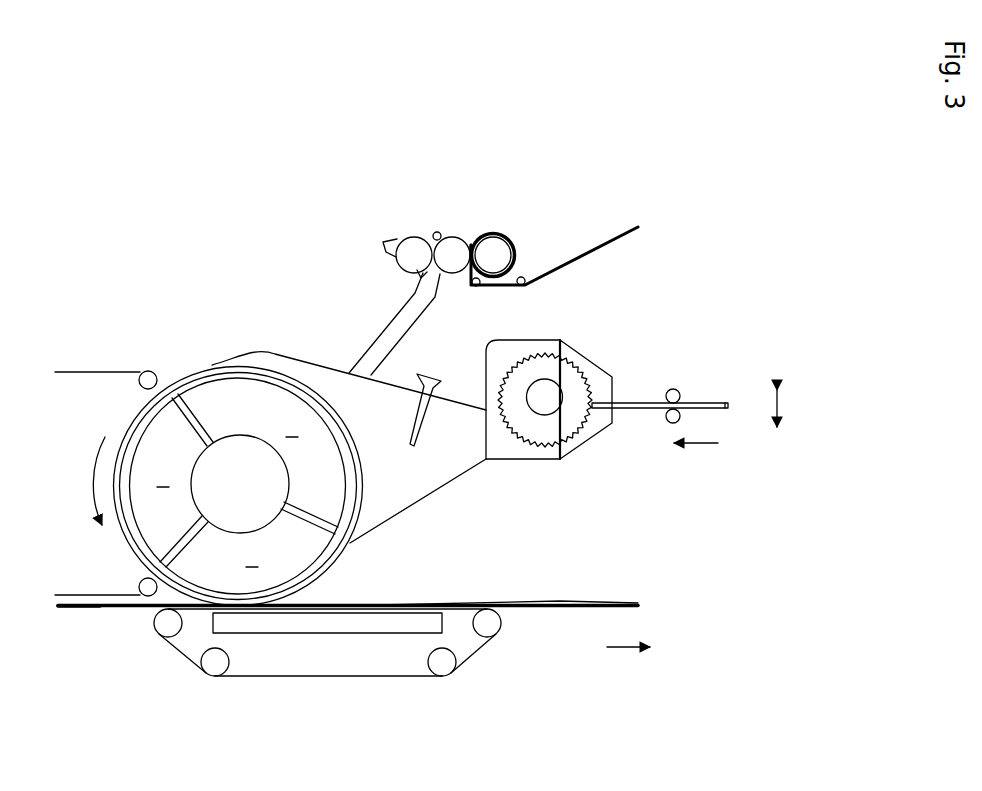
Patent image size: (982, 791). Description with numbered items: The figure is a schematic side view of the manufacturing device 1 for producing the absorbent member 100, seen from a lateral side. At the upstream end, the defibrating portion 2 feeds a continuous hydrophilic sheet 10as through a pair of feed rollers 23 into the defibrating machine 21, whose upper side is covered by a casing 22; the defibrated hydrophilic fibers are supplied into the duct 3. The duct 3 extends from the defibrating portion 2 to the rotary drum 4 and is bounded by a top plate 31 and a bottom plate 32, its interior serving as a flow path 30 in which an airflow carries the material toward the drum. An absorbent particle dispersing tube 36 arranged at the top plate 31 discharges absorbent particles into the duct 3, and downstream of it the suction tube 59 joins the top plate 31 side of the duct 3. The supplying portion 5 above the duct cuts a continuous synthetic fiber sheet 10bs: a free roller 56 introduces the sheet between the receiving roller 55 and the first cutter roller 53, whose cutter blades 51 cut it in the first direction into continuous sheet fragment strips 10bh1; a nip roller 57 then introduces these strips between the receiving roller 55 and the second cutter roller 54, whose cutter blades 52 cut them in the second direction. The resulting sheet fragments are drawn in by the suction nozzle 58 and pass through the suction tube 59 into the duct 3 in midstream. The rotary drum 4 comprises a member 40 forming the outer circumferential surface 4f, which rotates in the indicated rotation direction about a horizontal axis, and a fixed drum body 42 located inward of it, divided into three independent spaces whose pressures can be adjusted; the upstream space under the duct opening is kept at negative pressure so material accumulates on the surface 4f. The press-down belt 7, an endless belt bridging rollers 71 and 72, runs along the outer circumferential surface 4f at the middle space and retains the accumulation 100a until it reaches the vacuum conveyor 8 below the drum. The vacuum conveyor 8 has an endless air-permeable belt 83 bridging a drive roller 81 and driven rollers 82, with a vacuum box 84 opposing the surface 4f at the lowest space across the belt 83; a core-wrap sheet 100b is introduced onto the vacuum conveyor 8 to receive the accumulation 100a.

The manufacturing device 1 is at (686, 112).
The defibrating portion 2 is at (578, 312).
The duct 3 is at (295, 322).
The rotary drum 4 is at (193, 338).
The outer circumferential surface 4f is at (208, 355).
The supplying portion 5 is at (450, 218).
The press-down belt 7 is at (65, 368).
The vacuum conveyor 8 is at (340, 690).
The hydrophilic sheet 10as is at (715, 402).
The synthetic fiber sheet 10bs is at (632, 226).
The continuous sheet fragment strips 10bh1 is at (472, 243).
The defibrating machine 21 is at (578, 366).
The casing 22 is at (522, 340).
The feed rollers 23 is at (672, 388).
The flow path 30 is at (440, 462).
The top plate 31 is at (303, 355).
The bottom plate 32 is at (418, 505).
The absorbent particle dispersing tube 36 is at (432, 378).
The member forming the outer circumferential surface 40 is at (176, 365).
The drum body 42 is at (254, 496).
The cutter blades 51 is at (497, 235).
The cutter blades 52 is at (390, 243).
The first cutter roller 53 is at (505, 248).
The second cutter roller 54 is at (410, 245).
The receiving roller 55 is at (455, 240).
The free roller 56 is at (476, 290).
The nip roller 57 is at (437, 232).
The suction nozzle 58 is at (420, 283).
The suction tube 59 is at (380, 333).
The roller 71 is at (145, 385).
The roller 72 is at (140, 585).
The drive roller 81 is at (160, 620).
The driven rollers 82 is at (212, 670).
The air-permeable belt 83 is at (368, 676).
The vacuum box 84 is at (302, 635).
The absorbent member 100 is at (612, 600).
The accumulation 100a is at (378, 598).
The core-wrap sheet 100b is at (72, 608).